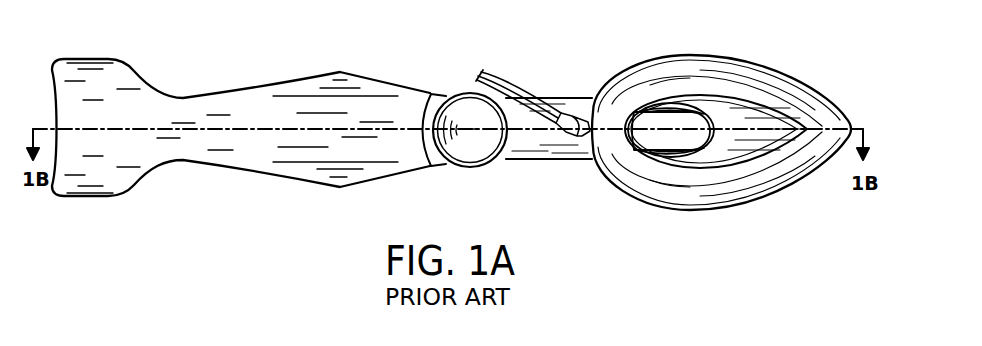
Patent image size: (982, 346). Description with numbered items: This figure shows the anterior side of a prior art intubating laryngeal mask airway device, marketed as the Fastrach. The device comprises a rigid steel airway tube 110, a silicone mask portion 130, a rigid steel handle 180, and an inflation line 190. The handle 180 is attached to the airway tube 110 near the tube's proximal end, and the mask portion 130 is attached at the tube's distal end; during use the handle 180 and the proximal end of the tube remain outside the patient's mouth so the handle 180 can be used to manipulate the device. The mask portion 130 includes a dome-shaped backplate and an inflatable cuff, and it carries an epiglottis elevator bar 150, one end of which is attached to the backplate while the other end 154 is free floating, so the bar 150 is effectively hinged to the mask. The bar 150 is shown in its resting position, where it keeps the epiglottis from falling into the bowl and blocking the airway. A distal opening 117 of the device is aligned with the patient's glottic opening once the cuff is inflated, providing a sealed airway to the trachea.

The airway tube 110 is at (557, 92).
The distal opening 117 is at (671, 152).
The mask portion 130 is at (779, 66).
The epiglottis elevator bar 150 is at (670, 110).
The free floating end of bar 154 is at (715, 126).
The handle 180 is at (293, 77).
The inflation line 190 is at (500, 78).